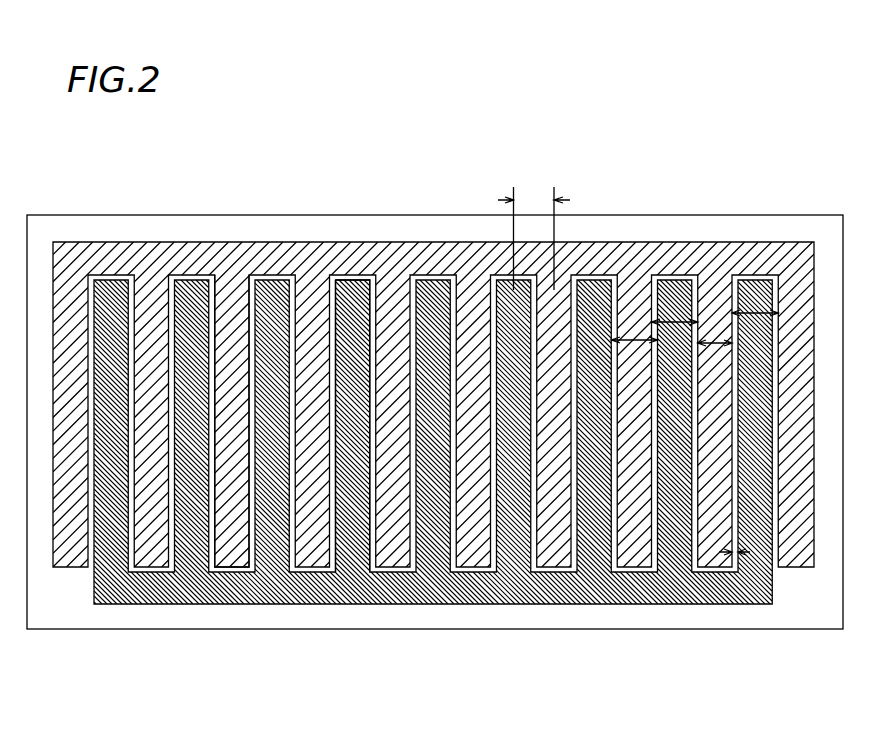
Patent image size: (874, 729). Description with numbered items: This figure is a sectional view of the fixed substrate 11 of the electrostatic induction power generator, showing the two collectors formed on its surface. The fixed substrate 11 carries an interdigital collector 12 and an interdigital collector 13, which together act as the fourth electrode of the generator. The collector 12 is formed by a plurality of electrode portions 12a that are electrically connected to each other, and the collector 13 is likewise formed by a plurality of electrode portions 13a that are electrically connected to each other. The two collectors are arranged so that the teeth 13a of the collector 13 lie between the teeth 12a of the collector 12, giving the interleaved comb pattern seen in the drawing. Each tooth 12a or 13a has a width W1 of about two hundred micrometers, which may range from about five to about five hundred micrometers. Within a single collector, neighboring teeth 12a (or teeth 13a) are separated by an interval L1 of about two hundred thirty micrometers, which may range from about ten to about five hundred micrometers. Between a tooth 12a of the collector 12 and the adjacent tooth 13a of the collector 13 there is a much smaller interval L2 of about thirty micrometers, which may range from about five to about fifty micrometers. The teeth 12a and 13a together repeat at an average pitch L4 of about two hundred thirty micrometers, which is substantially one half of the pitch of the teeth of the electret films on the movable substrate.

The fixed substrate 11 is at (192, 225).
The collector 12 is at (264, 251).
The collector 13 is at (343, 590).
The electrode portion 12a is at (232, 538).
The electrode portion 13a is at (356, 295).
The average pitch L4 is at (534, 230).
The width W1 is at (631, 340).
The interval L1 is at (708, 343).
The interval L2 is at (735, 553).